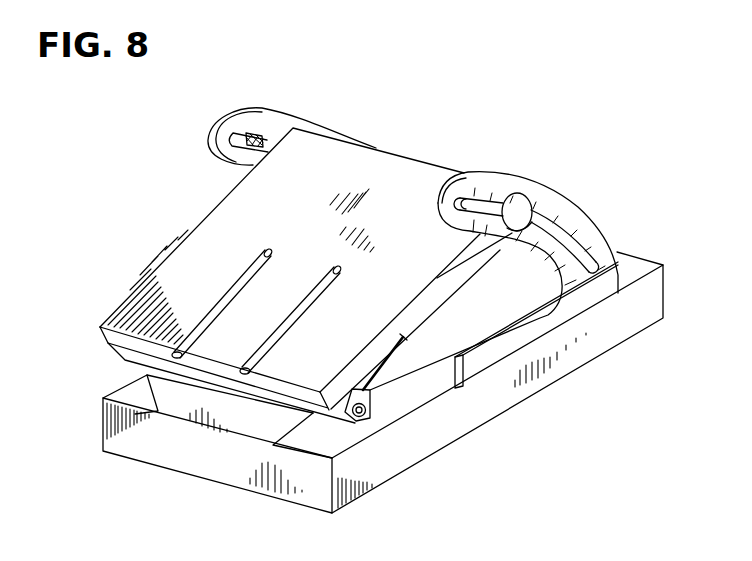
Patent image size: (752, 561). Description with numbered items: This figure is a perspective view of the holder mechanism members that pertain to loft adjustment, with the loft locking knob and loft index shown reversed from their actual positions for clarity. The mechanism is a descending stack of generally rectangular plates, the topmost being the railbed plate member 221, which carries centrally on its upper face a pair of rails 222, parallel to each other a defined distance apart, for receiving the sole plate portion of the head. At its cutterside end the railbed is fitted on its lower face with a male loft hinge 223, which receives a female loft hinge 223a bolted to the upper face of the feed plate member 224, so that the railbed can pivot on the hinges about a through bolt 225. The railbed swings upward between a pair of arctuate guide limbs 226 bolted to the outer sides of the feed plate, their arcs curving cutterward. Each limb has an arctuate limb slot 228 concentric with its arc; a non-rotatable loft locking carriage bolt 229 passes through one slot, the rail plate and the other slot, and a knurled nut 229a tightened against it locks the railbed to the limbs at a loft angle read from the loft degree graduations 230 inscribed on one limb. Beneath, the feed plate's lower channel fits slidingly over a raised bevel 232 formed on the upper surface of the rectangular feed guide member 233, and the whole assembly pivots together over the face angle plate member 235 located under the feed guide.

The railbed plate member 221 is at (165, 300).
The rails 222 is at (267, 253).
The male loft hinge 223 is at (140, 357).
The female loft hinge 223a is at (313, 413).
The feed plate member 224 is at (383, 408).
The through bolt 225 is at (372, 412).
The arctuate guide limbs 226 is at (213, 142).
The arctuate limb slot 228 is at (479, 203).
The loft locking carriage bolt 229 is at (513, 210).
The knurled nut 229a is at (253, 133).
The loft degree graduations 230 is at (470, 176).
The raised bevel 232 is at (253, 430).
The feed guide member 233 is at (142, 413).
The face angle plate member 235 is at (606, 330).